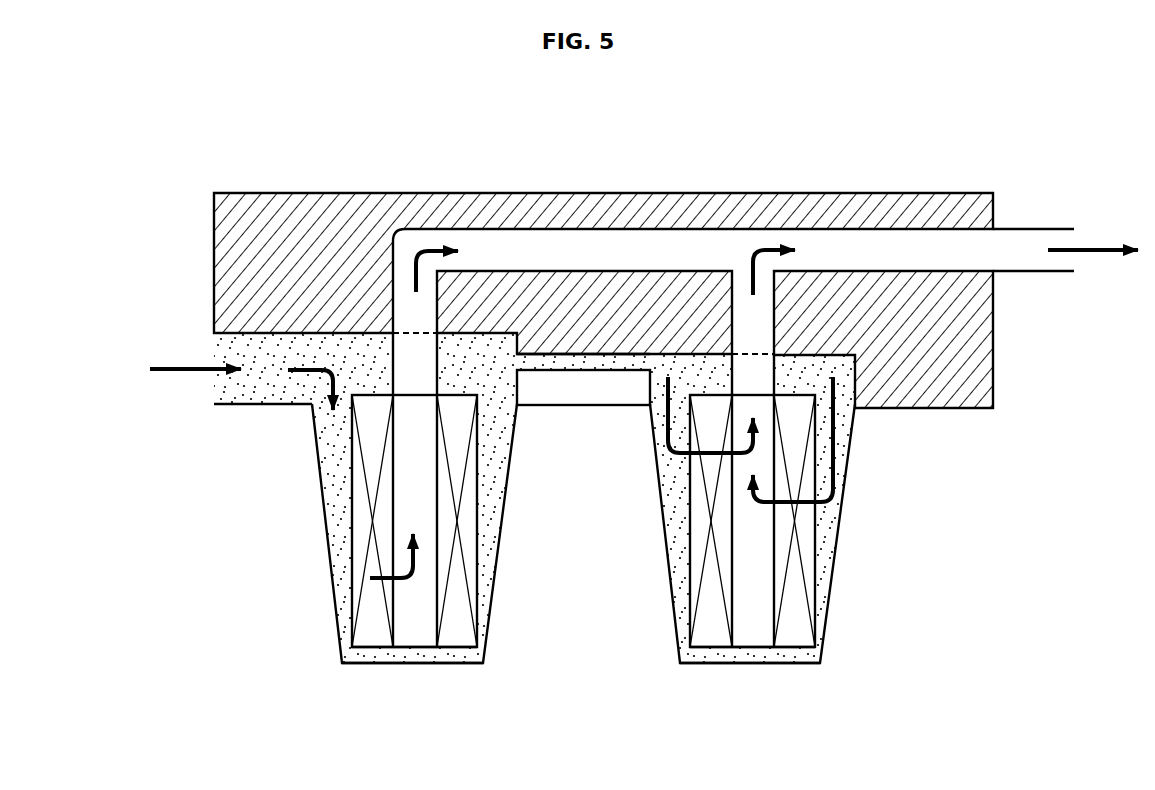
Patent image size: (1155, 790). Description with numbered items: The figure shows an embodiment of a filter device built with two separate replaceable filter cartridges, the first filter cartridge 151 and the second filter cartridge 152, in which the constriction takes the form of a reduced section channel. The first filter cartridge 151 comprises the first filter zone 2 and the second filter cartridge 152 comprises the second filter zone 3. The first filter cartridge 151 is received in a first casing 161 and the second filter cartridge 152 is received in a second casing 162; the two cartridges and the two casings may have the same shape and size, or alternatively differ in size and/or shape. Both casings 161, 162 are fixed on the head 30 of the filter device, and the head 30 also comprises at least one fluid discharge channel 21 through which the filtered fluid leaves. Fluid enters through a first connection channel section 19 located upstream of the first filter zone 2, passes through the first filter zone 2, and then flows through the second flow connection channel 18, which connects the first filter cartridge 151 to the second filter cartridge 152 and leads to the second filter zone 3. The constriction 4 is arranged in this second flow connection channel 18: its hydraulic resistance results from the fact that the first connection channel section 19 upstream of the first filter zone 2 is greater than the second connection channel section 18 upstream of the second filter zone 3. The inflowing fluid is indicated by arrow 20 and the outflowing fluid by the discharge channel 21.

The first filter zone 2 is at (362, 521).
The second filter zone 3 is at (700, 521).
The constriction 4 is at (614, 363).
The second flow connection channel 18 is at (583, 379).
The first connection channel section 19 is at (268, 388).
The inflowing exhaust gas 20 is at (203, 365).
The fluid discharge channel 21 is at (1097, 248).
The head 30 is at (521, 313).
The first replaceable filter cartridge 151 is at (373, 650).
The second replaceable filter cartridge 152 is at (712, 650).
The first casing 161 is at (325, 554).
The second casing 162 is at (663, 554).